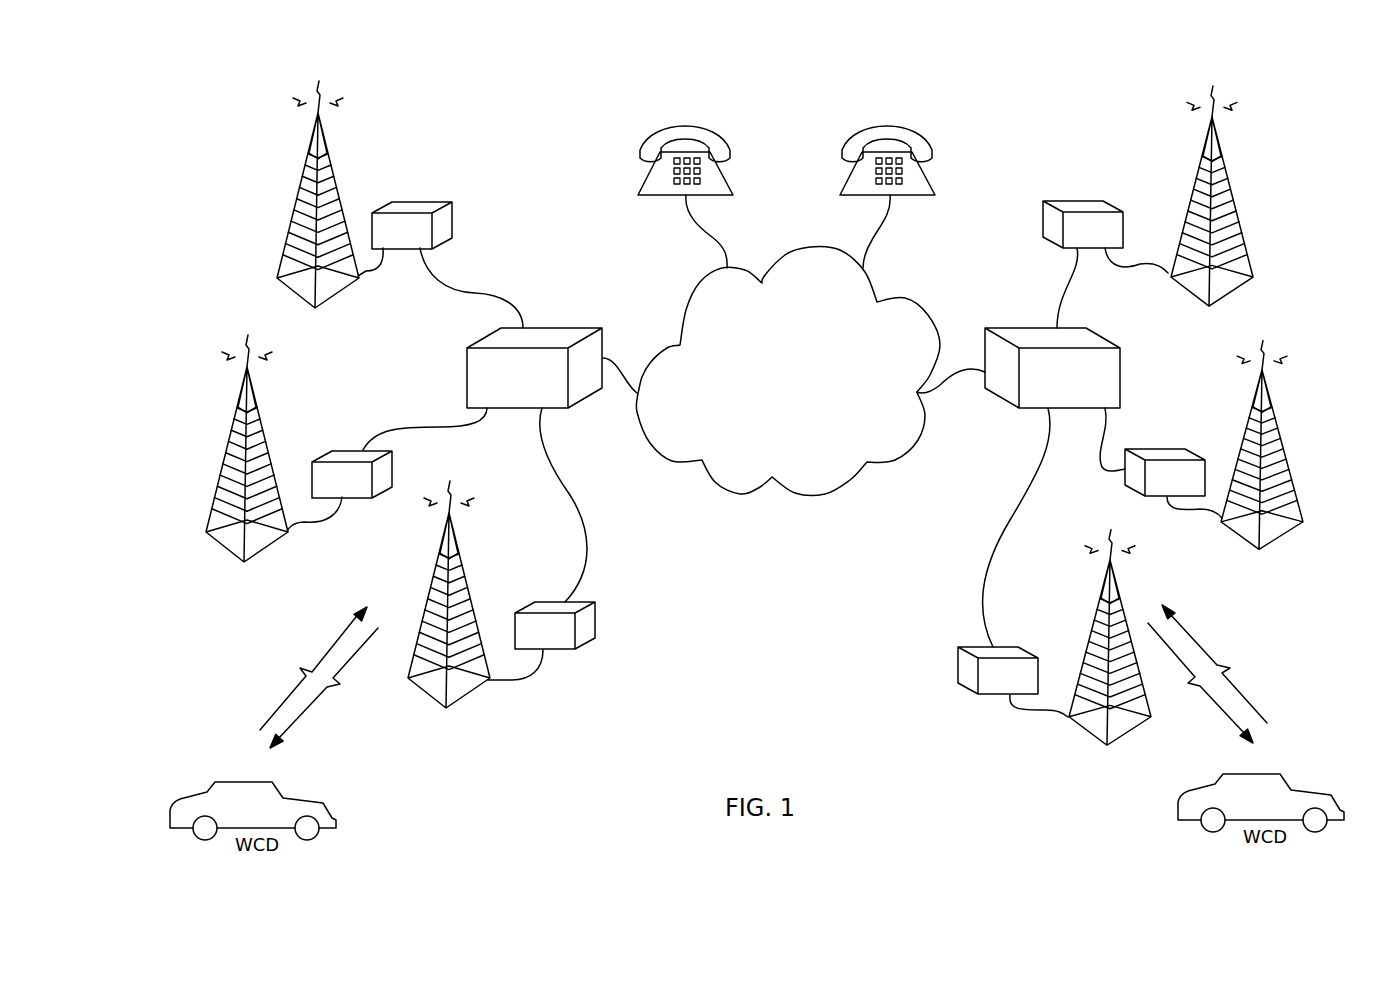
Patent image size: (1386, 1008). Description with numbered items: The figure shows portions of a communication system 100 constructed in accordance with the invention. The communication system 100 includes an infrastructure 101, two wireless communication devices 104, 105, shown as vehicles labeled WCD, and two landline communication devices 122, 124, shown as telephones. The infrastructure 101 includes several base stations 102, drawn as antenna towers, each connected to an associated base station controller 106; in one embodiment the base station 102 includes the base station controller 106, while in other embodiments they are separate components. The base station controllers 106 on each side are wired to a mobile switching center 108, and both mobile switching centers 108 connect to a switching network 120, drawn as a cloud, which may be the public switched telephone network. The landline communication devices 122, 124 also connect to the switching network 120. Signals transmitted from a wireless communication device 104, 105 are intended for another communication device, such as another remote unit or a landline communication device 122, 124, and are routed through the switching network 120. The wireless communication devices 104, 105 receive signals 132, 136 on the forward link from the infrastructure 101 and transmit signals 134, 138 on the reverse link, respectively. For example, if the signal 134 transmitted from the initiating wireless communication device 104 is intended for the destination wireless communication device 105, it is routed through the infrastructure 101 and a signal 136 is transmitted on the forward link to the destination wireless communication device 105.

The communication system 100 is at (1312, 118).
The infrastructure 101 is at (829, 575).
The base station 102 is at (302, 198).
The wireless communication device 104 is at (302, 802).
The wireless communication device 105 is at (1312, 793).
The base station controller 106 is at (422, 201).
The mobile switching center 108 is at (560, 327).
The switching network 120 is at (919, 306).
The landline communication device 122 is at (887, 124).
The landline communication device 124 is at (685, 124).
The forward link signal 132 is at (342, 678).
The reverse link signal 134 is at (340, 641).
The forward link signal 136 is at (1222, 706).
The reverse link signal 138 is at (1191, 640).